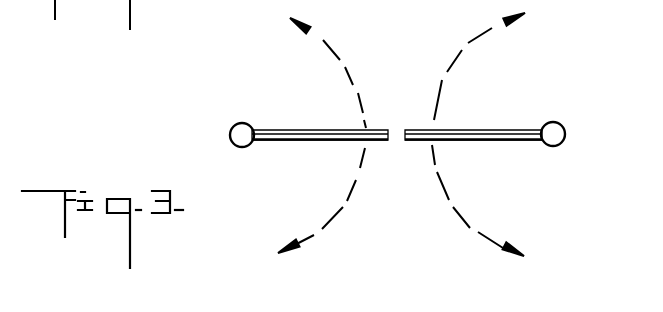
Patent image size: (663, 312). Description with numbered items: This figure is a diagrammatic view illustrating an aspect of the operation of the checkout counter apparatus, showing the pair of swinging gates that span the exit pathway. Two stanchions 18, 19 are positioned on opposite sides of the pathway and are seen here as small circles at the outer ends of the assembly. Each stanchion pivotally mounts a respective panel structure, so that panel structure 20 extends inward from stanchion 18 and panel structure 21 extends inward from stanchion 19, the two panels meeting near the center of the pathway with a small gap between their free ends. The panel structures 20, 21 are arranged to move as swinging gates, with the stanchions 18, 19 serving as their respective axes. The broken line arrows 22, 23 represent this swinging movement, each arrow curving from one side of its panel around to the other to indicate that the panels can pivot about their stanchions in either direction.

The stanchion 18 is at (233, 123).
The stanchion 19 is at (552, 146).
The panel structure 20 is at (310, 130).
The panel structure 21 is at (495, 130).
The broken line arrow 22 is at (324, 229).
The broken line arrow 23 is at (455, 210).